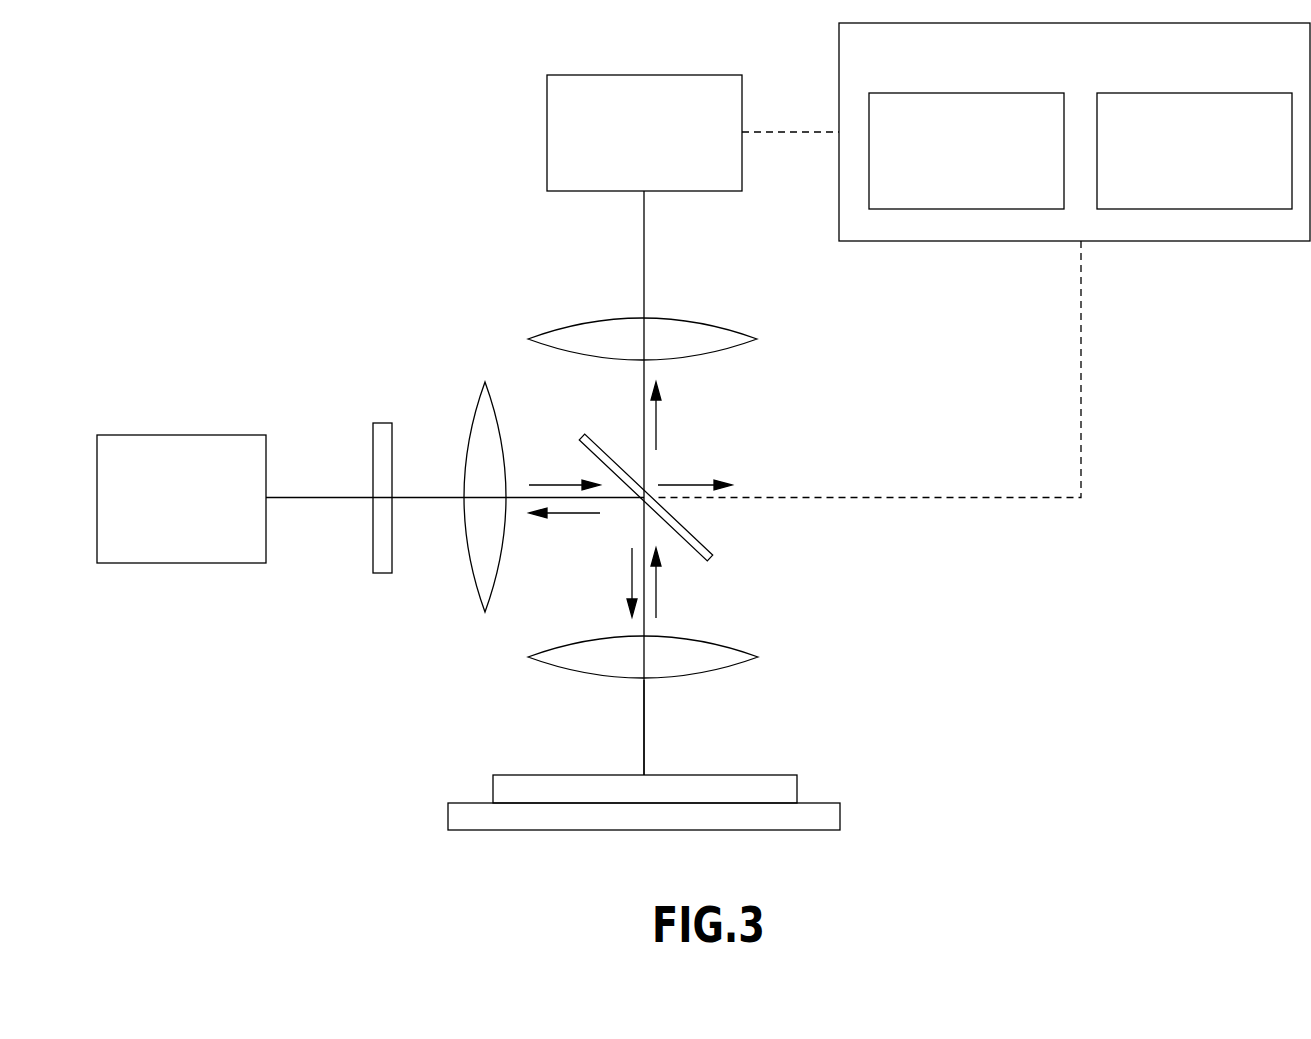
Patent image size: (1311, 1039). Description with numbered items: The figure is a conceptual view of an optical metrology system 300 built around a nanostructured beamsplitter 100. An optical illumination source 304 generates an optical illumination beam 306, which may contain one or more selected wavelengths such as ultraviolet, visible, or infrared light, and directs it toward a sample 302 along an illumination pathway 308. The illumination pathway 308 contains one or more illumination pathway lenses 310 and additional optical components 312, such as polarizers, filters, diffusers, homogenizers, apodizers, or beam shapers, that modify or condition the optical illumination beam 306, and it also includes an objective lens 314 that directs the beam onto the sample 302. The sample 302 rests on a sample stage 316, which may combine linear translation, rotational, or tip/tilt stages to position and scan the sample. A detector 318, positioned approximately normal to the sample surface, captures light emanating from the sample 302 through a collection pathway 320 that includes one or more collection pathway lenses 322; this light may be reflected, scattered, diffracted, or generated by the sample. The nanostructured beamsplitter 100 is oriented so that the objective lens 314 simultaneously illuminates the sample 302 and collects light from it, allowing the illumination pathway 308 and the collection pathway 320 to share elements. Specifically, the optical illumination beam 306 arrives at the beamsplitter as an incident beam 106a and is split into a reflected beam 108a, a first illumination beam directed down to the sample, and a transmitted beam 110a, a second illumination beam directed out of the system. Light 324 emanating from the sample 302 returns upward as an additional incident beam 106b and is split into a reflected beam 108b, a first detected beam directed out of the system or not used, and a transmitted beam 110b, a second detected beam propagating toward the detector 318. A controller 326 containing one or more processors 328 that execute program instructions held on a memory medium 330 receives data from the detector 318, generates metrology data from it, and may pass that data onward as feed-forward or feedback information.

The optical metrology system 300 is at (277, 239).
The sample 302 is at (797, 787).
The optical illumination source 304 is at (200, 510).
The optical illumination beam 306 is at (320, 496).
The illumination pathway 308 is at (451, 359).
The illumination pathway lens 310 is at (480, 602).
The optical component 312 is at (382, 573).
The objective lens 314 is at (732, 643).
The sample stage 316 is at (840, 813).
The detector 318 is at (663, 148).
The collection pathway 320 is at (786, 407).
The collection pathway lens 322 is at (733, 327).
The light emanating from the sample 324 is at (643, 707).
The controller 326 is at (885, 57).
The processors 328 is at (915, 125).
The memory medium 330 is at (1143, 125).
The nanostructured beamsplitter 100 is at (618, 467).
The incident beam 106a is at (572, 483).
The additional incident beam 106b is at (657, 593).
The reflected beam 108a is at (632, 580).
The reflected beam 108b is at (586, 515).
The transmitted beam 110a is at (682, 482).
The transmitted beam 110b is at (656, 425).